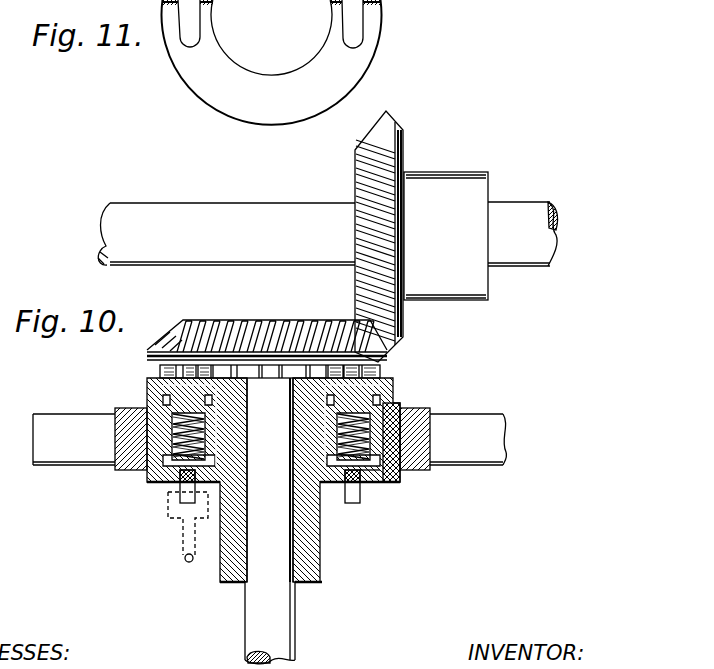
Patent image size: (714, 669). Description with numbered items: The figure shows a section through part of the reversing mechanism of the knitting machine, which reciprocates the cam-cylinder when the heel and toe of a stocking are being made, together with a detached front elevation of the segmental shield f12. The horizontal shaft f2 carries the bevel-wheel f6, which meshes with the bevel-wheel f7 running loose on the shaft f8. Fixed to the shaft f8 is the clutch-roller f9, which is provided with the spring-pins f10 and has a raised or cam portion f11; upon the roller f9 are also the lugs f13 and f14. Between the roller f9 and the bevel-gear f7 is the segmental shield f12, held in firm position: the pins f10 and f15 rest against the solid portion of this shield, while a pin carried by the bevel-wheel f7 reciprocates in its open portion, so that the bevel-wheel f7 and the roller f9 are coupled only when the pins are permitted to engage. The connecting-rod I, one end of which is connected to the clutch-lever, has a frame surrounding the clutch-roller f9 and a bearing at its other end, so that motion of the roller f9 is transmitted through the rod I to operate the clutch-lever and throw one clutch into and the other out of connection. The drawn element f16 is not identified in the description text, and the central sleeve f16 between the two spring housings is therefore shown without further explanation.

In FIG. 10, the shaft f2 is at (267, 213).
In FIG. 10, the bevel-wheel f6 is at (400, 158).
In FIG. 10, the bevel-wheel f7 is at (240, 318).
In FIG. 10, the shaft f8 is at (257, 608).
In FIG. 10, the clutch-roller f9 is at (378, 487).
In FIG. 10, the spring-pin f10 is at (150, 386).
In FIG. 10, the raised or cam portion f11 is at (380, 484).
In FIG. 11, the segmental shield f12 is at (360, 58).
In FIG. 10, the segmental shield f12 is at (380, 370).
In FIG. 10, the lug f13 is at (182, 499).
In FIG. 10, the lug f14 is at (352, 503).
In FIG. 10, the pin f15 is at (397, 385).
In FIG. 10, the hub shaft f16 is at (268, 380).
In FIG. 10, the connecting-rod I is at (503, 418).